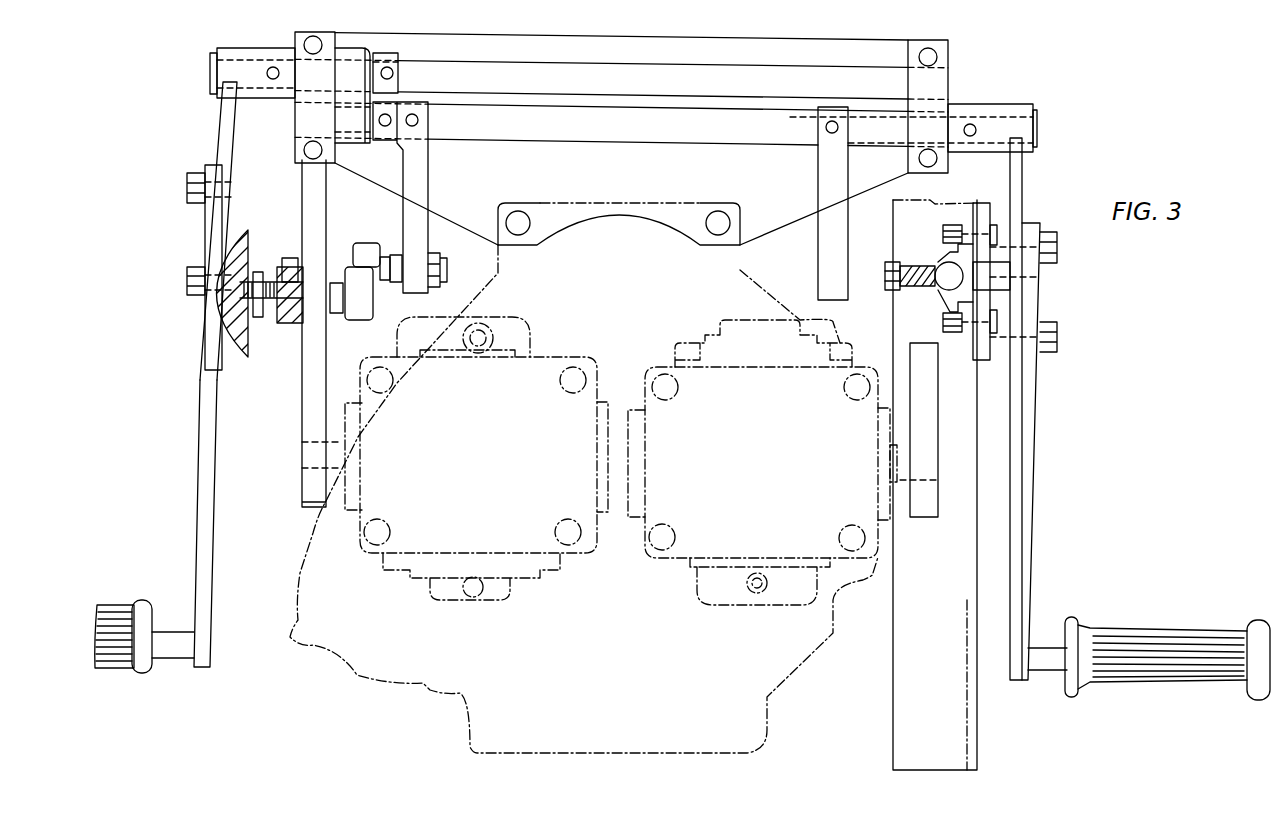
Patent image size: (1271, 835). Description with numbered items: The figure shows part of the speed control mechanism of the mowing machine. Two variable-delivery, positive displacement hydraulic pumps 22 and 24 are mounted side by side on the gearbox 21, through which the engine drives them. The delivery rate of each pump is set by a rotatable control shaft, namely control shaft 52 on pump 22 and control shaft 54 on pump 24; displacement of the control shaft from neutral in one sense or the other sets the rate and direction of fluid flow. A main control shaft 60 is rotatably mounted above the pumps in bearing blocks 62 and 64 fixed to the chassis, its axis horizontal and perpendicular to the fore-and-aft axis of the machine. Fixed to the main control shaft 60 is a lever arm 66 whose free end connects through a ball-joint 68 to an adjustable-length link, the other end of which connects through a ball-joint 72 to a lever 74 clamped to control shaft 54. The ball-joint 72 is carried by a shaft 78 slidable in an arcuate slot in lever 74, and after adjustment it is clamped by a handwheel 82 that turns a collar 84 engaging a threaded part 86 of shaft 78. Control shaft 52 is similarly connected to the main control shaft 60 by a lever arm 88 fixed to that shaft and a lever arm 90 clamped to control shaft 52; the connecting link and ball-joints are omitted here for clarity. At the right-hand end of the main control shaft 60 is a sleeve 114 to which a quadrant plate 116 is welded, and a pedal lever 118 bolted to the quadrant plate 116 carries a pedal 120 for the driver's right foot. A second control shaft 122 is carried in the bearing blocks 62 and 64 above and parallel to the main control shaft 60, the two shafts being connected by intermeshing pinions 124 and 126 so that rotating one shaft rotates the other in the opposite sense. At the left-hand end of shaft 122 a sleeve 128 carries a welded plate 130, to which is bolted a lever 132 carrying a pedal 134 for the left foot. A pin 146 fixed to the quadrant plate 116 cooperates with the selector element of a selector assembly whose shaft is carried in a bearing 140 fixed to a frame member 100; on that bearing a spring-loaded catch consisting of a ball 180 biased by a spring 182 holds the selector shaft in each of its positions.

The gearbox 21 is at (368, 678).
The hydraulic pump 22 is at (759, 462).
The hydraulic pump 24 is at (476, 458).
The control shaft 52 is at (900, 467).
The control shaft 54 is at (322, 435).
The main control shaft 60 is at (550, 130).
The bearing block 62 is at (302, 139).
The bearing block 64 is at (946, 165).
The lever arm 66 is at (428, 177).
The ball-joint 68 is at (361, 252).
The ball-joint 72 is at (352, 313).
The lever 74 is at (313, 372).
The shaft 78 is at (334, 314).
The handwheel 82 is at (222, 331).
The collar 84 is at (293, 318).
The threaded part 86 is at (283, 262).
The lever arm 88 is at (848, 224).
The lever arm 90 is at (912, 350).
The frame member 100 is at (978, 716).
The sleeve 114 is at (989, 112).
The quadrant plate 116 is at (1023, 178).
The pedal lever 118 is at (1027, 431).
The pedal 120 is at (1118, 630).
The second control shaft 122 is at (621, 66).
The pinion 124 is at (355, 143).
The pinion 126 is at (298, 40).
The sleeve 128 is at (215, 53).
The plate 130 is at (229, 127).
The lever 132 is at (208, 443).
The pedal 134 is at (118, 618).
The bearing 140 is at (940, 258).
The pin 146 is at (1010, 277).
The ball 180 is at (938, 291).
The spring 182 is at (908, 297).